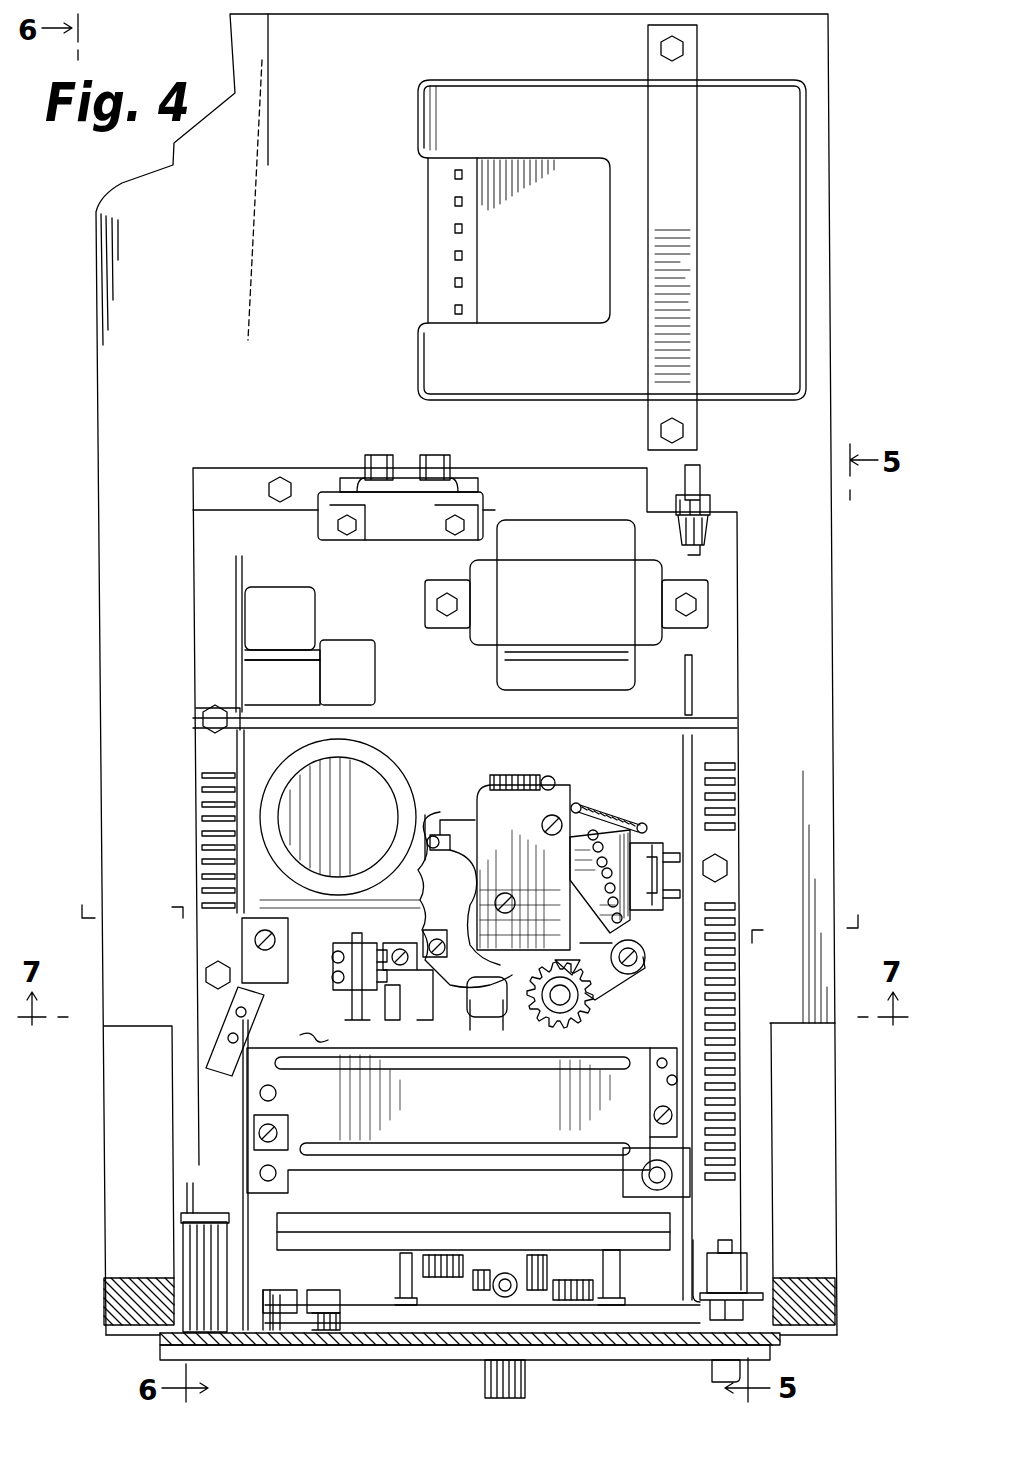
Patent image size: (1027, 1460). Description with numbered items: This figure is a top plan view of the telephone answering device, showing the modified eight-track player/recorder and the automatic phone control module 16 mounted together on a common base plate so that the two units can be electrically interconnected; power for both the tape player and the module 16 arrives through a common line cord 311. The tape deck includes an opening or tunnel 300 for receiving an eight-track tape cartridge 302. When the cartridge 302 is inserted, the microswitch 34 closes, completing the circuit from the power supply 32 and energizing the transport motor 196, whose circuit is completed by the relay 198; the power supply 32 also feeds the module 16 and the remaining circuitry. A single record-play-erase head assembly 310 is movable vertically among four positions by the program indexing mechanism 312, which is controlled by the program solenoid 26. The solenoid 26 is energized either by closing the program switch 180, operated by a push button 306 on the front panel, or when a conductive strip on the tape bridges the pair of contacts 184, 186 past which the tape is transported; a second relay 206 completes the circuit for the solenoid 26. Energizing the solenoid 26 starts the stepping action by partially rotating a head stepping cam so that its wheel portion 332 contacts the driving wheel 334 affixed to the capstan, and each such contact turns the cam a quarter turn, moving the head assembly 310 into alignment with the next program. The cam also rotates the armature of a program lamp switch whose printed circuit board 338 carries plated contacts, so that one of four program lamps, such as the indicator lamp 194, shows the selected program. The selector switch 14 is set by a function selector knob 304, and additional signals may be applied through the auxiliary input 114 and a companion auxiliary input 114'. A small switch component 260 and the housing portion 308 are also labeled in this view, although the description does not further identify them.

The selector switch 14 is at (465, 1298).
The automatic phone control module 16 is at (790, 248).
The program solenoid 26 is at (622, 857).
The power supply 32 is at (481, 668).
The microswitch 34 is at (286, 1030).
The auxiliary input 114 is at (400, 478).
The terminal post 114' is at (346, 454).
The program switch 180 is at (761, 1264).
The contact 184 is at (366, 1020).
The contact 186 is at (350, 1022).
The indicator lamp 194 is at (195, 1248).
The transport motor 196 is at (278, 780).
The relay 198 is at (290, 598).
The second relay 206 is at (355, 650).
The microswitch 260 is at (660, 875).
The tunnel 300 is at (306, 1357).
The eight-track tape cartridge 302 is at (470, 1364).
The function selector knob 304 is at (492, 1376).
The push button 306 is at (712, 1366).
The housing 308 is at (110, 300).
The head assembly 310 is at (470, 1010).
The common line cord 311 is at (705, 485).
The program indexing mechanism 312 is at (475, 781).
The wheel portion 332 is at (423, 900).
The driving wheel 334 is at (583, 1010).
The printed circuit board 338 is at (590, 838).